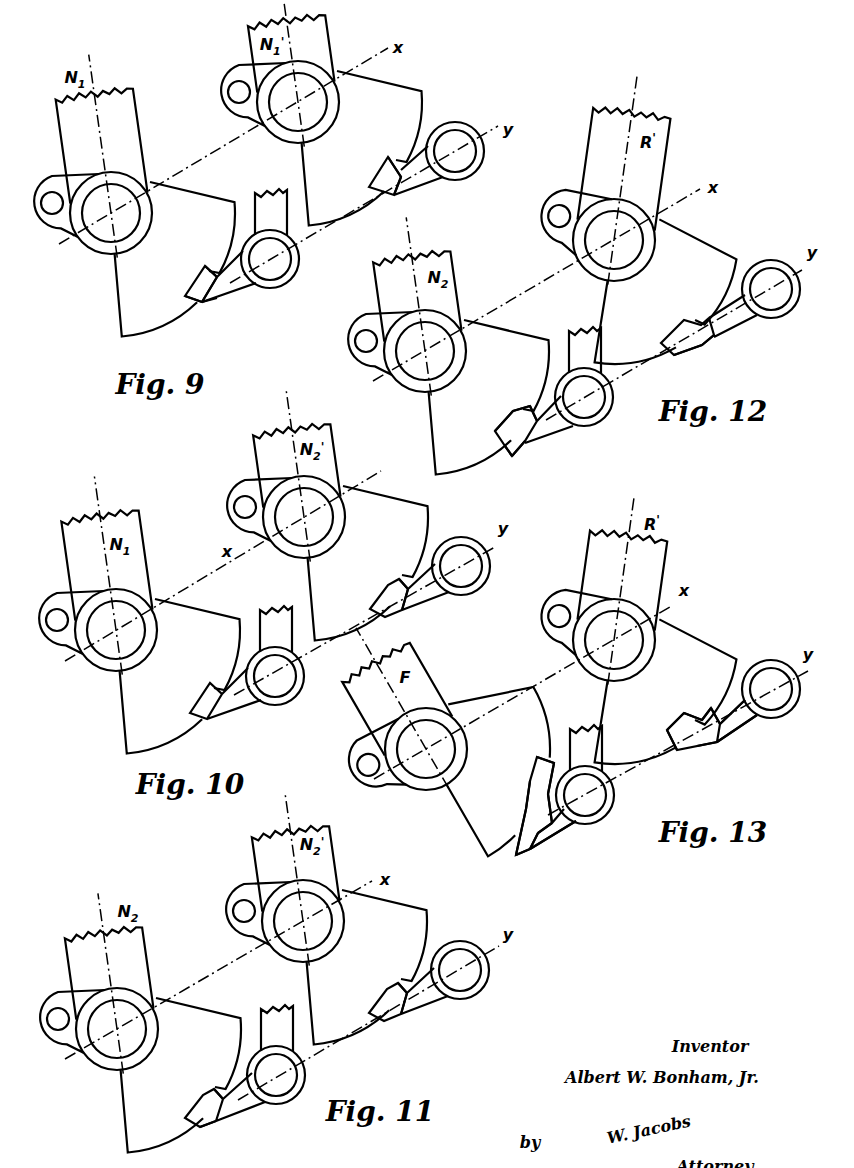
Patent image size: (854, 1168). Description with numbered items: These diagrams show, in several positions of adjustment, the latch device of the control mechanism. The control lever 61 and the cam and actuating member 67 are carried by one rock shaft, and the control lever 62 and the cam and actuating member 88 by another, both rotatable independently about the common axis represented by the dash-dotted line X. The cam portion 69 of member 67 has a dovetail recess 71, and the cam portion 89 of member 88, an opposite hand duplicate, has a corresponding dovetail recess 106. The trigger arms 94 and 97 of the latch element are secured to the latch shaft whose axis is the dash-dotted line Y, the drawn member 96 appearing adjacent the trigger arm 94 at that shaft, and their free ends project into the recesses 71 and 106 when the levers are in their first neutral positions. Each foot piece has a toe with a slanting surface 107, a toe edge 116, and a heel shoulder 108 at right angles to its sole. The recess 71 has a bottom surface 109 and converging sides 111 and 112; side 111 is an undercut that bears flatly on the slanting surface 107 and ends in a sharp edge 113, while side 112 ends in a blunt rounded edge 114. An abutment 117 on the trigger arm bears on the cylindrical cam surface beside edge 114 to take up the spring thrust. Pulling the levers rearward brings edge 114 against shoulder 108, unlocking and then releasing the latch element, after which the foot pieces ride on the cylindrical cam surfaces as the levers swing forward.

In FIG. 9, the control lever 61 is at (110, 145).
In FIG. 10, the control lever 61 is at (120, 564).
In FIG. 11, the control lever 61 is at (121, 972).
In FIG. 12, the control lever 61 is at (431, 295).
In FIG. 13, the control lever 61 is at (401, 697).
In FIG. 9, the control lever 62 is at (304, 52).
In FIG. 10, the control lever 62 is at (313, 464).
In FIG. 11, the control lever 62 is at (309, 867).
In FIG. 12, the control lever 62 is at (641, 168).
In FIG. 13, the control lever 62 is at (640, 579).
In FIG. 9, the cam and actuating member 67 is at (106, 219).
In FIG. 9, the cam portion 69 is at (175, 270).
In FIG. 10, the cam portion 69 is at (168, 676).
In FIG. 11, the cam portion 69 is at (169, 1075).
In FIG. 12, the cam portion 69 is at (472, 397).
In FIG. 13, the cam portion 69 is at (503, 764).
In FIG. 9, the dovetail recess 71 is at (210, 276).
In FIG. 10, the dovetail recess 71 is at (218, 693).
In FIG. 11, the dovetail recess 71 is at (220, 1100).
In FIG. 12, the dovetail recess 71 is at (521, 426).
In FIG. 13, the dovetail recess 71 is at (540, 806).
In FIG. 9, the cam and actuating member 88 is at (295, 107).
In FIG. 9, the cam portion 89 is at (377, 148).
In FIG. 10, the cam portion 89 is at (369, 563).
In FIG. 11, the cam portion 89 is at (368, 966).
In FIG. 12, the cam portion 89 is at (666, 300).
In FIG. 13, the cam portion 89 is at (667, 700).
In FIG. 9, the trigger arm 94 is at (269, 272).
In FIG. 10, the trigger arm 94 is at (275, 689).
In FIG. 11, the trigger arm 94 is at (276, 1089).
In FIG. 12, the trigger arm 94 is at (584, 410).
In FIG. 13, the trigger arm 94 is at (585, 808).
In FIG. 9, the pawl support 96 is at (264, 201).
In FIG. 10, the pawl support 96 is at (276, 620).
In FIG. 11, the pawl support 96 is at (277, 1022).
In FIG. 12, the pawl support 96 is at (579, 338).
In FIG. 13, the pawl support 96 is at (586, 740).
In FIG. 9, the trigger arm 97 is at (455, 160).
In FIG. 10, the trigger arm 97 is at (461, 577).
In FIG. 11, the trigger arm 97 is at (460, 982).
In FIG. 12, the trigger arm 97 is at (771, 301).
In FIG. 13, the trigger arm 97 is at (771, 699).
In FIG. 9, the dovetail recess 106 is at (398, 168).
In FIG. 10, the dovetail recess 106 is at (402, 590).
In FIG. 11, the dovetail recess 106 is at (400, 994).
In FIG. 12, the dovetail recess 106 is at (709, 325).
In FIG. 13, the dovetail recess 106 is at (706, 738).
In FIG. 9, the slanting surface 107 is at (199, 313).
In FIG. 12, the slanting surface 107 is at (717, 348).
In FIG. 13, the slanting surface 107 is at (638, 796).
In FIG. 9, the shoulder 108 is at (310, 239).
In FIG. 10, the shoulder 108 is at (397, 611).
In FIG. 11, the shoulder 108 is at (399, 1016).
In FIG. 13, the shoulder 108 is at (619, 778).
In FIG. 12, the bottom surface 109 is at (493, 414).
In FIG. 13, the bottom surface 109 is at (603, 726).
In FIG. 9, the side 111 is at (175, 306).
In FIG. 12, the side 111 is at (485, 451).
In FIG. 13, the side 111 is at (604, 781).
In FIG. 12, the side 112 is at (527, 397).
In FIG. 13, the side 112 is at (593, 757).
In FIG. 11, the sharp edge 113 is at (211, 1133).
In FIG. 12, the sharp edge 113 is at (598, 410).
In FIG. 13, the sharp edge 113 is at (583, 787).
In FIG. 9, the blunt edge 114 is at (306, 198).
In FIG. 10, the blunt edge 114 is at (399, 569).
In FIG. 11, the blunt edge 114 is at (308, 1028).
In FIG. 12, the blunt edge 114 is at (548, 420).
In FIG. 13, the blunt edge 114 is at (624, 742).
In FIG. 13, the toe edge 116 is at (602, 807).
In FIG. 13, the abutment 117 is at (649, 766).